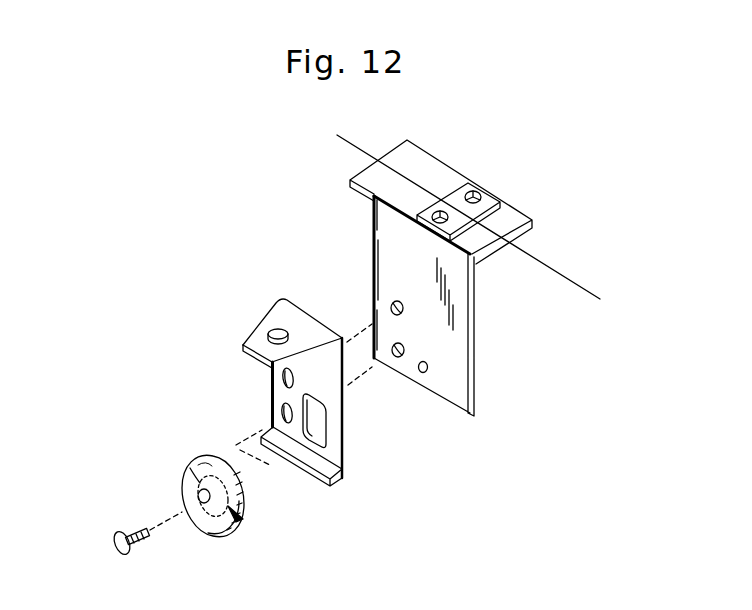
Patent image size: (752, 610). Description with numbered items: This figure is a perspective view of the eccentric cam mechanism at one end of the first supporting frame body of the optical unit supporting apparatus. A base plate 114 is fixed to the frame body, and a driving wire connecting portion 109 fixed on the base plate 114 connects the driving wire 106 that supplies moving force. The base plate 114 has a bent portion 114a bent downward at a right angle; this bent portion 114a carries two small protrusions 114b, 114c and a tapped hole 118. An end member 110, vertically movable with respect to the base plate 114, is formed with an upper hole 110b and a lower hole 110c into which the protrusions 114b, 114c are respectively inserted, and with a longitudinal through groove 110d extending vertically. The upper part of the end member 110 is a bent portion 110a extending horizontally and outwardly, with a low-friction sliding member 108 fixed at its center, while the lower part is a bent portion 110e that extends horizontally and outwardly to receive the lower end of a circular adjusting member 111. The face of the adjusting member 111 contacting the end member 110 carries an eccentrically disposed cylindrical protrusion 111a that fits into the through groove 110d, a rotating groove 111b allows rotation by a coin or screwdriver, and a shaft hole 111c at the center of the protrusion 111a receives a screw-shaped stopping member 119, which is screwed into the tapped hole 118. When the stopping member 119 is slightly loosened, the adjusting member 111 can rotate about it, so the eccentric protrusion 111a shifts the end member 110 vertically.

The driving wire 106 is at (571, 281).
The sliding member 108 is at (267, 330).
The driving wire connecting portion 109 is at (488, 192).
The end member 110 is at (290, 385).
The bent portion 110a is at (273, 304).
The hole 110b is at (268, 368).
The hole 110c is at (278, 406).
The longitudinal through groove 110d is at (322, 430).
The bent portion 110e is at (334, 487).
The adjusting member 111 is at (213, 486).
The cylindrical protrusion 111a is at (198, 465).
The rotating groove 111b is at (243, 520).
The shaft hole 111c is at (195, 473).
The base plate 114 is at (362, 164).
The bent portion 114a is at (457, 300).
The small protrusion 114b is at (391, 304).
The small protrusion 114c is at (393, 345).
The tapped hole 118 is at (424, 373).
The stopping member 119 is at (133, 524).